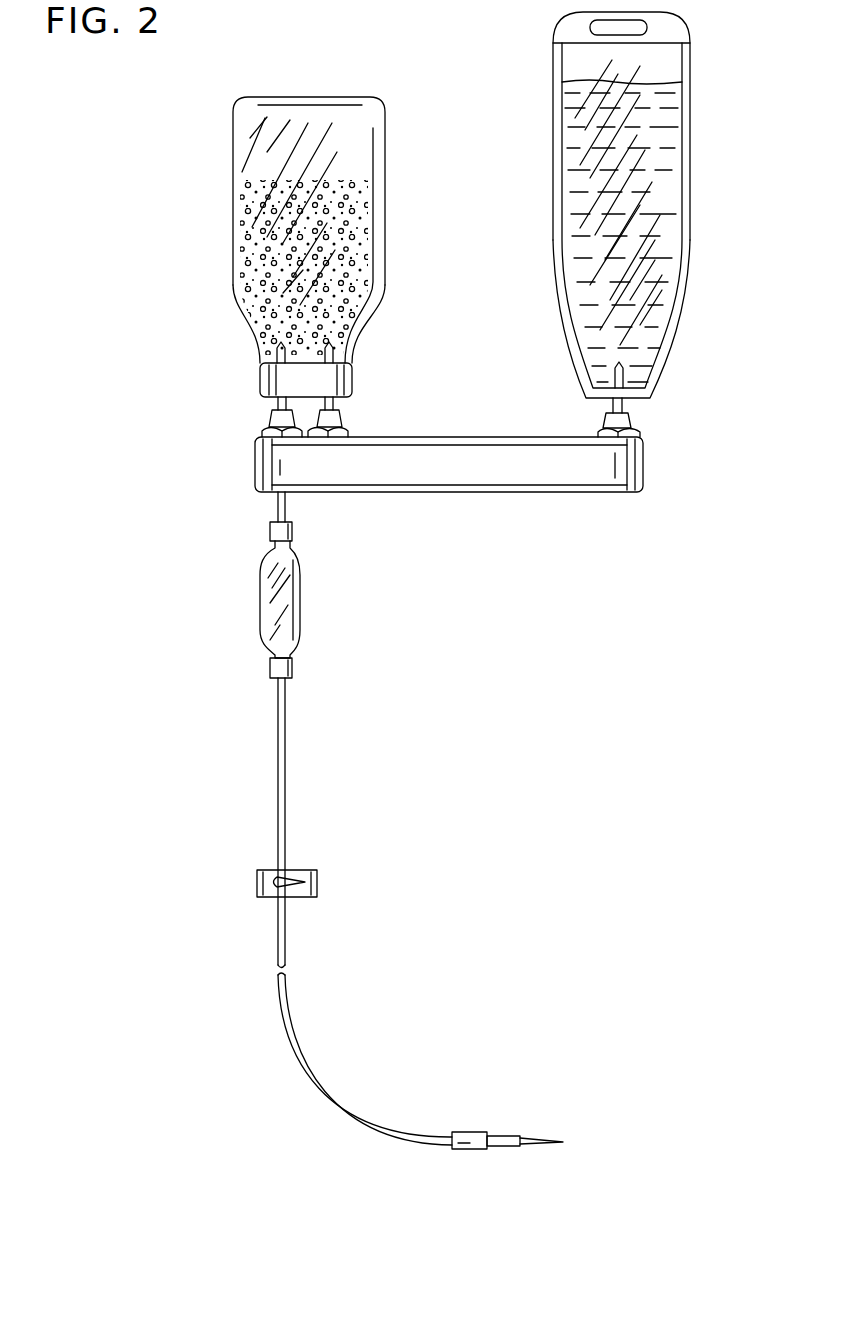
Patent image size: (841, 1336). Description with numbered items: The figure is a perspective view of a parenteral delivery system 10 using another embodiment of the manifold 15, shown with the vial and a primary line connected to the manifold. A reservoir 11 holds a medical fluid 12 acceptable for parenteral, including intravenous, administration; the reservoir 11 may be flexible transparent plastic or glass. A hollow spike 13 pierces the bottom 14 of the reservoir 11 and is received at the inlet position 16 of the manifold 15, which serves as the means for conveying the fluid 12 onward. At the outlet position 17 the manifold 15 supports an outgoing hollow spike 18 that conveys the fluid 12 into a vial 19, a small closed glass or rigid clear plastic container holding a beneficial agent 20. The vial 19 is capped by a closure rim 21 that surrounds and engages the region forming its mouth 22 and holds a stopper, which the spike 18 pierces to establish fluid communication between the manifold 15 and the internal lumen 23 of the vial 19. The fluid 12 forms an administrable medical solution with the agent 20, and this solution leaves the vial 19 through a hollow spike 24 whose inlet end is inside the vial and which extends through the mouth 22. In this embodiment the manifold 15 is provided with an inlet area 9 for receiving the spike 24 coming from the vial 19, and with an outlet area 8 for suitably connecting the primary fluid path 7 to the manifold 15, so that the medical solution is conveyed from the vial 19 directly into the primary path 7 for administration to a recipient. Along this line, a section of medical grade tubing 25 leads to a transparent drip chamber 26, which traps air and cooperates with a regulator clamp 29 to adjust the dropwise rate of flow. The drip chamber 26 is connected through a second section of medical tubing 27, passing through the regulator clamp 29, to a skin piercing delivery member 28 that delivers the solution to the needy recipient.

The primary fluid path 7 is at (280, 705).
The outlet area 8 is at (268, 497).
The inlet area 9 is at (268, 432).
The parenteral delivery system 10 is at (165, 212).
The reservoir 11 is at (690, 136).
The medical fluid 12 is at (650, 192).
The spike 13 is at (620, 366).
The bottom 14 is at (633, 393).
The manifold 15 is at (628, 463).
The inlet position 16 is at (640, 431).
The outlet position 17 is at (343, 432).
The spike 18 is at (333, 405).
The vial 19 is at (383, 231).
The beneficial agent 20 is at (357, 197).
The closure rim 21 is at (275, 385).
The mouth 22 is at (268, 402).
The internal lumen 23 is at (363, 140).
The spike 24 is at (277, 350).
The medical grade tubing 25 is at (275, 510).
The drip chamber 26 is at (260, 590).
The medical tubing 27 is at (278, 795).
The skin piercing delivery member 28 is at (495, 1133).
The regulator clamp 29 is at (257, 882).